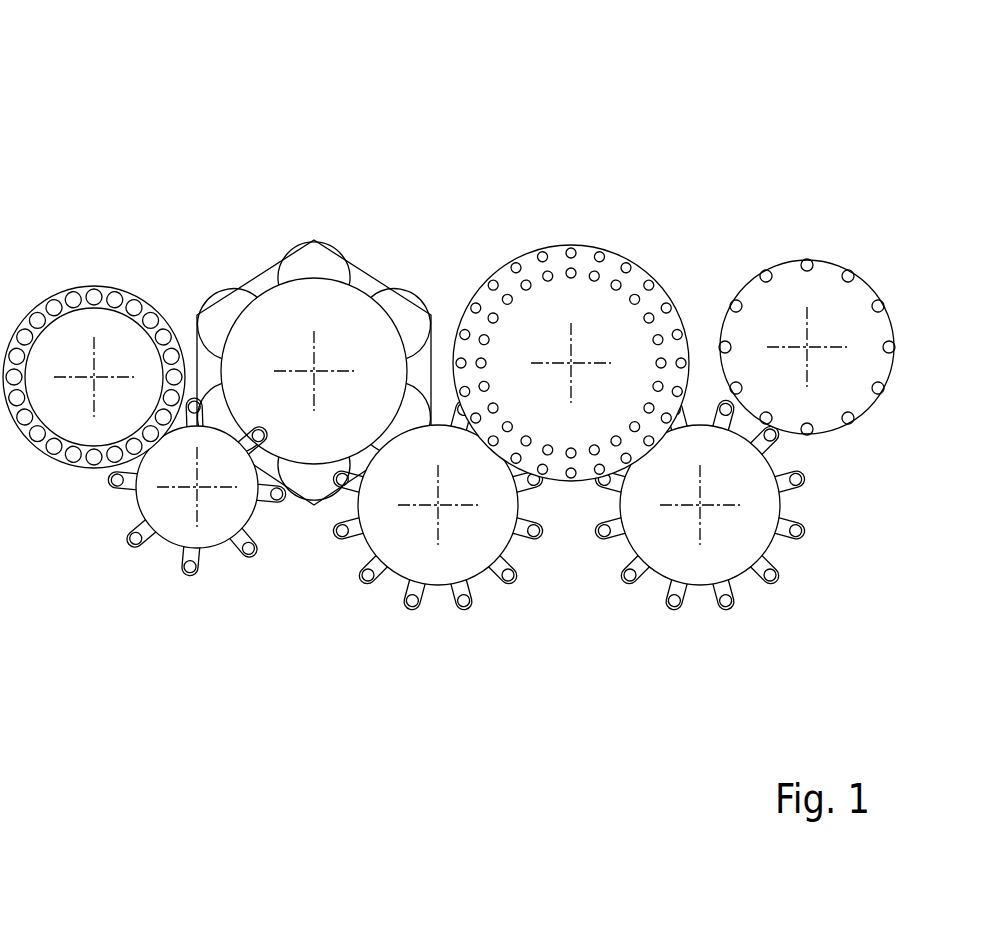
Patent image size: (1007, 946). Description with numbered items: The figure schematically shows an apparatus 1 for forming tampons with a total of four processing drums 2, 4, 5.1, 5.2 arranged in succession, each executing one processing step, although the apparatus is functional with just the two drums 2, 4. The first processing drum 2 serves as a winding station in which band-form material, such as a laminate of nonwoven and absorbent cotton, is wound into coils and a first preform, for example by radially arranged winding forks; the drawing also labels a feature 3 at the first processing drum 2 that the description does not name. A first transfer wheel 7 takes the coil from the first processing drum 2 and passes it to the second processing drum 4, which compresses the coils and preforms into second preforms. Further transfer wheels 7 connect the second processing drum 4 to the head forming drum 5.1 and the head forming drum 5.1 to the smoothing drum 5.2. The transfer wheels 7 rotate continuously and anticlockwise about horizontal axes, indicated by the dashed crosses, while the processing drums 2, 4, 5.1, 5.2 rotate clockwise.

The apparatus 1 is at (275, 171).
The first processing drum 2 is at (110, 271).
The receiving pockets of feed drum 3 is at (63, 474).
The second processing drum 4 is at (370, 257).
The third processing drum 5.1 is at (620, 242).
The fourth processing drum 5.2 is at (788, 252).
The transfer wheel 7 is at (228, 556).